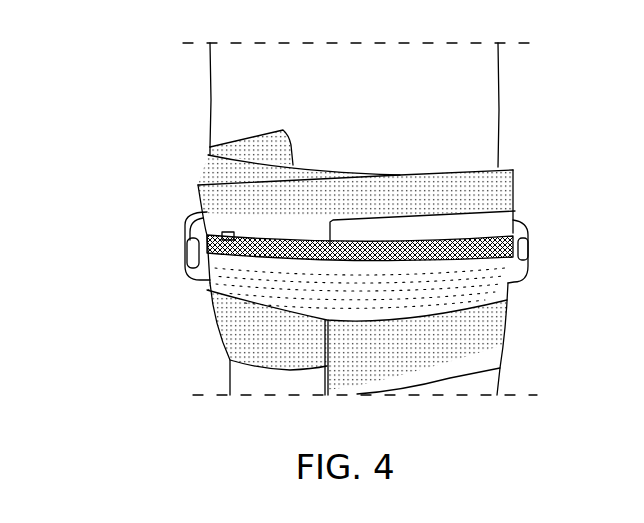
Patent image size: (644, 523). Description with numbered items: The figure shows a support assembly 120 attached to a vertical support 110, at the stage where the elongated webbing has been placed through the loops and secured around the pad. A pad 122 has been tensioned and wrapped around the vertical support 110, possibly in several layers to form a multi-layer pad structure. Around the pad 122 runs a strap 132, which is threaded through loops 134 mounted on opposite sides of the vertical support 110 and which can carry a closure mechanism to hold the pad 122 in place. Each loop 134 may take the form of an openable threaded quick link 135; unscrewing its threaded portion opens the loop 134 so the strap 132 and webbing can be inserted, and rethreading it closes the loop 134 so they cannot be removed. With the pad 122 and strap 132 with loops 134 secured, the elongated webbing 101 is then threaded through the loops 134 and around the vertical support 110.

The support assembly 120 is at (167, 112).
The pad 122 is at (215, 173).
The strap 132 is at (433, 242).
The vertical support 110 is at (488, 130).
The loop 134 is at (192, 273).
The threaded quick link 135 is at (185, 255).
The elongated webbing 101 is at (488, 297).